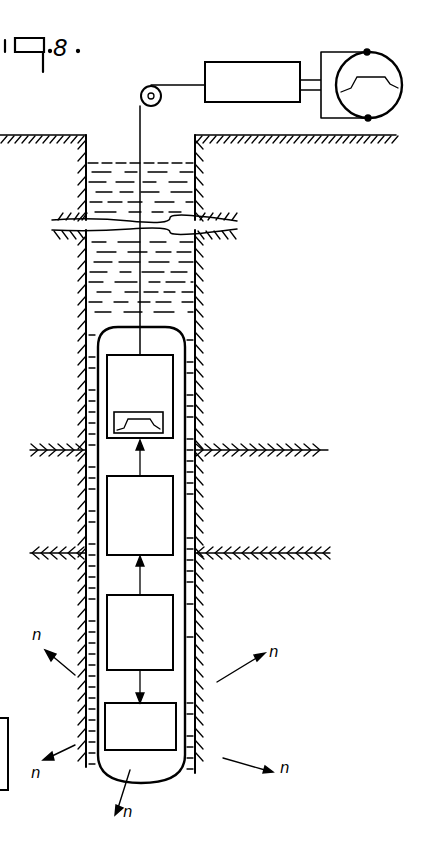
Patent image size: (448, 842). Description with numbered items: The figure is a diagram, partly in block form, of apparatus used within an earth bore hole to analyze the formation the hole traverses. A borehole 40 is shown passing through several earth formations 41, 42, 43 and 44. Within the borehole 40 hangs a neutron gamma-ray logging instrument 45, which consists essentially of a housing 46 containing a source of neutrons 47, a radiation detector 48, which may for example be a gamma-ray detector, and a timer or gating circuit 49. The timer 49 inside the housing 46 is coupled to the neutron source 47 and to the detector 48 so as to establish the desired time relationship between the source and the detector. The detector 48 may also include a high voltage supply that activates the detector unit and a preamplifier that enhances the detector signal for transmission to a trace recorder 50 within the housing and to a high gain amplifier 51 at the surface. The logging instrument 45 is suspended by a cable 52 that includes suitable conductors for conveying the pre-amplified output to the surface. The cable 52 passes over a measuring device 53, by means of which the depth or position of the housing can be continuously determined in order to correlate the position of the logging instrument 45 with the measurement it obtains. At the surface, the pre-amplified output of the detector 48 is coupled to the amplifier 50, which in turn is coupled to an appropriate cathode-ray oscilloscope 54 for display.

The borehole 40 is at (183, 281).
The earth formation 41 is at (252, 182).
The earth formation 42 is at (256, 349).
The earth formation 43 is at (258, 507).
The earth formation 44 is at (270, 616).
The neutron gamma-ray logging instrument 45 is at (178, 428).
The housing 46 is at (176, 402).
The source of neutrons 47 is at (171, 752).
The radiation detector 48 is at (107, 507).
The timer or gating circuit 49 is at (173, 650).
The amplifier 50 is at (247, 62).
The high gain amplifier 51 is at (108, 386).
The cable 52 is at (140, 148).
The measuring device 53 is at (156, 86).
The cathode-ray oscilloscope 54 is at (386, 58).